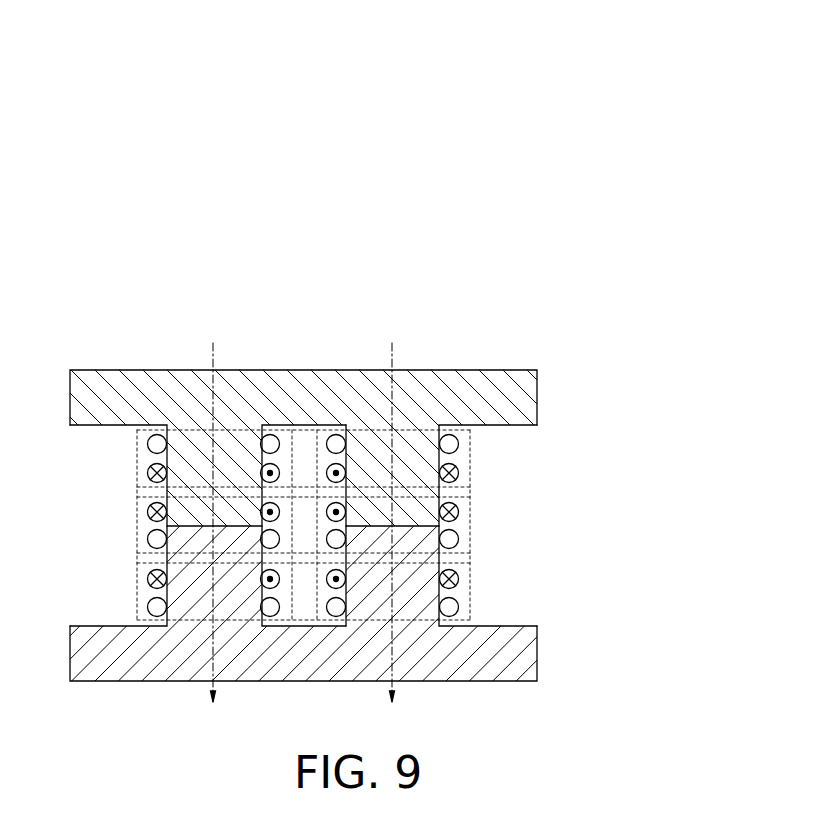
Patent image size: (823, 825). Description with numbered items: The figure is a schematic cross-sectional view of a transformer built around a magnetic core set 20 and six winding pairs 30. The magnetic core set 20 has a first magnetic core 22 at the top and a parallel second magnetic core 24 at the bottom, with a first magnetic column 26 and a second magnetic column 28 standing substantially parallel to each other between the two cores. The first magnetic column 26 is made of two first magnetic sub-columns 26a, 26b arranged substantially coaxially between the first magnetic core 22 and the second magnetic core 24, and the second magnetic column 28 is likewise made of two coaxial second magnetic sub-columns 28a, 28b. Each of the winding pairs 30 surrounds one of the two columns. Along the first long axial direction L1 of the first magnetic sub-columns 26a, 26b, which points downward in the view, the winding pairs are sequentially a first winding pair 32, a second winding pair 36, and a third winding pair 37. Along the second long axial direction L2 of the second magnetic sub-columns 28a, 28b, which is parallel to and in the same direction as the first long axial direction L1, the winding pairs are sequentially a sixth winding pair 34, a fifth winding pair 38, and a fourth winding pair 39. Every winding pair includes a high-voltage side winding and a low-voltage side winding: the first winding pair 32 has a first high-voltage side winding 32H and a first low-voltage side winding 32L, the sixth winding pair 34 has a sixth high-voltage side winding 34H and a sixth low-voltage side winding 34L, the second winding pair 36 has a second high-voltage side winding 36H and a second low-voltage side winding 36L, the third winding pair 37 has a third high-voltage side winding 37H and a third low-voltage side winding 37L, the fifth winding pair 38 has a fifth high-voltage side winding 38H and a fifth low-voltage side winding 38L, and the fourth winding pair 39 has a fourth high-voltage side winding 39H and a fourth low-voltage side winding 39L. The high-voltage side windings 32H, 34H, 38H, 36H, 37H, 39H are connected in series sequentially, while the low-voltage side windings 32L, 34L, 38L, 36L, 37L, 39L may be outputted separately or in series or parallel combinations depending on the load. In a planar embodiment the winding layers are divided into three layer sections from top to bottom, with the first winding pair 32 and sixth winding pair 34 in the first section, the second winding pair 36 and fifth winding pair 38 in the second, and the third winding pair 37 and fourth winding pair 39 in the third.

The magnetic core set 20 is at (548, 18).
The first magnetic core 22 is at (305, 395).
The second magnetic core 24 is at (305, 657).
The first magnetic column 26 is at (503, 65).
The first magnetic sub-column 26a is at (177, 450).
The first magnetic sub-column 26b is at (246, 607).
The second magnetic column 28 is at (503, 128).
The second magnetic sub-column 28a is at (431, 448).
The second magnetic sub-column 28b is at (362, 608).
The winding pairs 30 is at (723, 18).
The first winding pair 32 is at (137, 455).
The first high-voltage side winding 32H is at (148, 474).
The first low-voltage side winding 32L is at (148, 443).
The sixth winding pair 34 is at (505, 458).
The sixth high-voltage side winding 34H is at (458, 474).
The sixth low-voltage side winding 34L is at (458, 444).
The second winding pair 36 is at (137, 523).
The second high-voltage side winding 36H is at (148, 511).
The second low-voltage side winding 36L is at (148, 541).
The third winding pair 37 is at (137, 590).
The third high-voltage side winding 37H is at (148, 578).
The third low-voltage side winding 37L is at (148, 607).
The fifth winding pair 38 is at (505, 528).
The fifth high-voltage side winding 38H is at (458, 512).
The fifth low-voltage side winding 38L is at (458, 540).
The fourth winding pair 39 is at (505, 594).
The fourth high-voltage side winding 39H is at (458, 579).
The fourth low-voltage side winding 39L is at (458, 607).
The first long axial direction L1 is at (212, 511).
The second long axial direction L2 is at (392, 511).